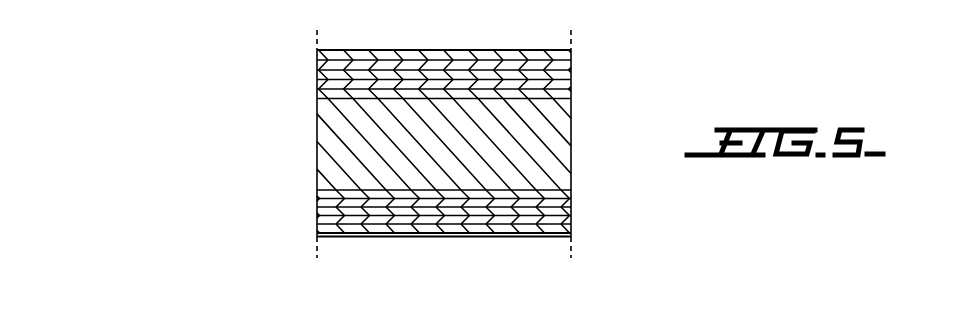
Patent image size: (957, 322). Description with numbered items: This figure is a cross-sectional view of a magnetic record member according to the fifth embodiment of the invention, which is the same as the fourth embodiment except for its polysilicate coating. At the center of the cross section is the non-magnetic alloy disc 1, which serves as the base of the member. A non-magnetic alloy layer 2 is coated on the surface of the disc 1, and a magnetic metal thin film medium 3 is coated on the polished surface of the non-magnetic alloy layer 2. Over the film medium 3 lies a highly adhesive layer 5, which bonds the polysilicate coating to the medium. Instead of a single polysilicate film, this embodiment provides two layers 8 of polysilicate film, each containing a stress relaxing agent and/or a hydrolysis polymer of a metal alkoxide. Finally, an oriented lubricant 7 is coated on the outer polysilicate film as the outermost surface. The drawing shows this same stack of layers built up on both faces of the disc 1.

The non-magnetic alloy disc 1 is at (573, 144).
The non-magnetic alloy layer 2 is at (573, 95).
The magnetic metal thin film medium 3 is at (573, 87).
The highly adhesive layer 5 is at (573, 80).
The oriented lubricant 7 is at (573, 53).
The two layers of polysilicate film 8 is at (574, 77).